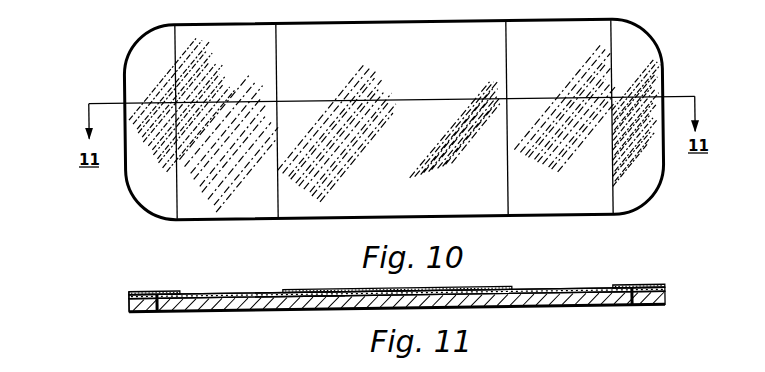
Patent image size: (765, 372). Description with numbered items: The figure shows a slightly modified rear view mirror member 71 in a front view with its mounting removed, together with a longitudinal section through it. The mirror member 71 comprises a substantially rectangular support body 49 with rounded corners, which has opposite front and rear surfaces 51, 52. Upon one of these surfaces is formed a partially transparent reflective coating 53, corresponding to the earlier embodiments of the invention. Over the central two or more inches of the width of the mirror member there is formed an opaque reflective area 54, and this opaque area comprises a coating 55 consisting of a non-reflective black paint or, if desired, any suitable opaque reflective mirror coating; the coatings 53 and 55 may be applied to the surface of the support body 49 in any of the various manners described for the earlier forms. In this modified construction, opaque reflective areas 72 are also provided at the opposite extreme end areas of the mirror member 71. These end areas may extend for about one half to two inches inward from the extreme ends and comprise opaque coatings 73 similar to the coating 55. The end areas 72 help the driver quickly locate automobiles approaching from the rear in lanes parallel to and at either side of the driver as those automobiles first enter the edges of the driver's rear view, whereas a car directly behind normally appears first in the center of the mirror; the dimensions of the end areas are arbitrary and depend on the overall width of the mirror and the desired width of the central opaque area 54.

In FIG. 10, the support body 49 is at (142, 72).
In FIG. 11, the support body 49 is at (130, 304).
In FIG. 11, the front surface 51 is at (211, 310).
In FIG. 11, the rear surface 52 is at (213, 291).
In FIG. 11, the partially transparent reflective coating 53 is at (250, 296).
In FIG. 10, the opaque reflective area 54 is at (346, 182).
In FIG. 11, the opaque reflective area 54 is at (323, 297).
In FIG. 11, the coating 55 is at (476, 290).
In FIG. 10, the mirror member 71 is at (128, 44).
In FIG. 10, the opaque reflective areas 72 is at (161, 170).
In FIG. 11, the opaque reflective areas 72 is at (157, 311).
In FIG. 11, the opaque coatings 73 is at (160, 292).